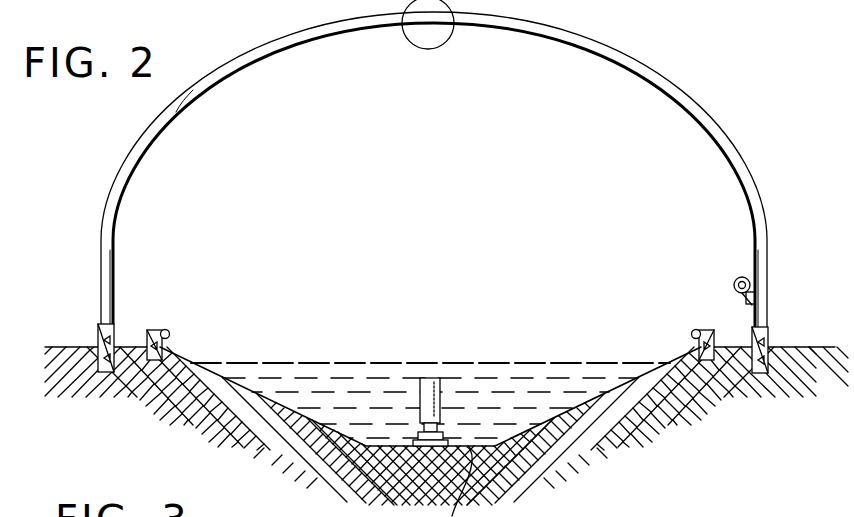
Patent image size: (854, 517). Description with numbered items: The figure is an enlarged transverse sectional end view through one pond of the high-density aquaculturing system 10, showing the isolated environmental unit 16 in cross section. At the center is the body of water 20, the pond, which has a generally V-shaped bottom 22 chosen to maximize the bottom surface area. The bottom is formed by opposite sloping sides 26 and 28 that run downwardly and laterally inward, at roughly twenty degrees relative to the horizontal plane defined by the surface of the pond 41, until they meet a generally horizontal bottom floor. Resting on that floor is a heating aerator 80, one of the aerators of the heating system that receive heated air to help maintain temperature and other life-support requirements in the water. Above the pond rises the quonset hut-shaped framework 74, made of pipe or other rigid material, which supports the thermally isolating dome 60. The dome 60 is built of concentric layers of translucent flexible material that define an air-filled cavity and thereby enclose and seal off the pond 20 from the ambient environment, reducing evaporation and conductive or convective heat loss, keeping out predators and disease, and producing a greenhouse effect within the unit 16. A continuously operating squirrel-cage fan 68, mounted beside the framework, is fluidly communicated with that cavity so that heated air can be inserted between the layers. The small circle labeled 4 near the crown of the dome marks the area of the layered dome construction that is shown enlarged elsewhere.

The high-density aquaculturing system 10 is at (427, 166).
The thermally isolating dome 60 is at (266, 44).
The isolated environmental unit 16 is at (140, 125).
The quonset hut-shaped framework 74 is at (184, 104).
The detail area of FIG. 4 is at (421, 57).
The squirrel-cage fan 68 is at (746, 277).
The V-shaped bottom 22 is at (258, 392).
The body of water 20 is at (347, 382).
The heating aerator 80 is at (428, 379).
The surface of the pond 41 is at (545, 366).
The sloping side 26 is at (273, 410).
The sloping side 28 is at (588, 410).